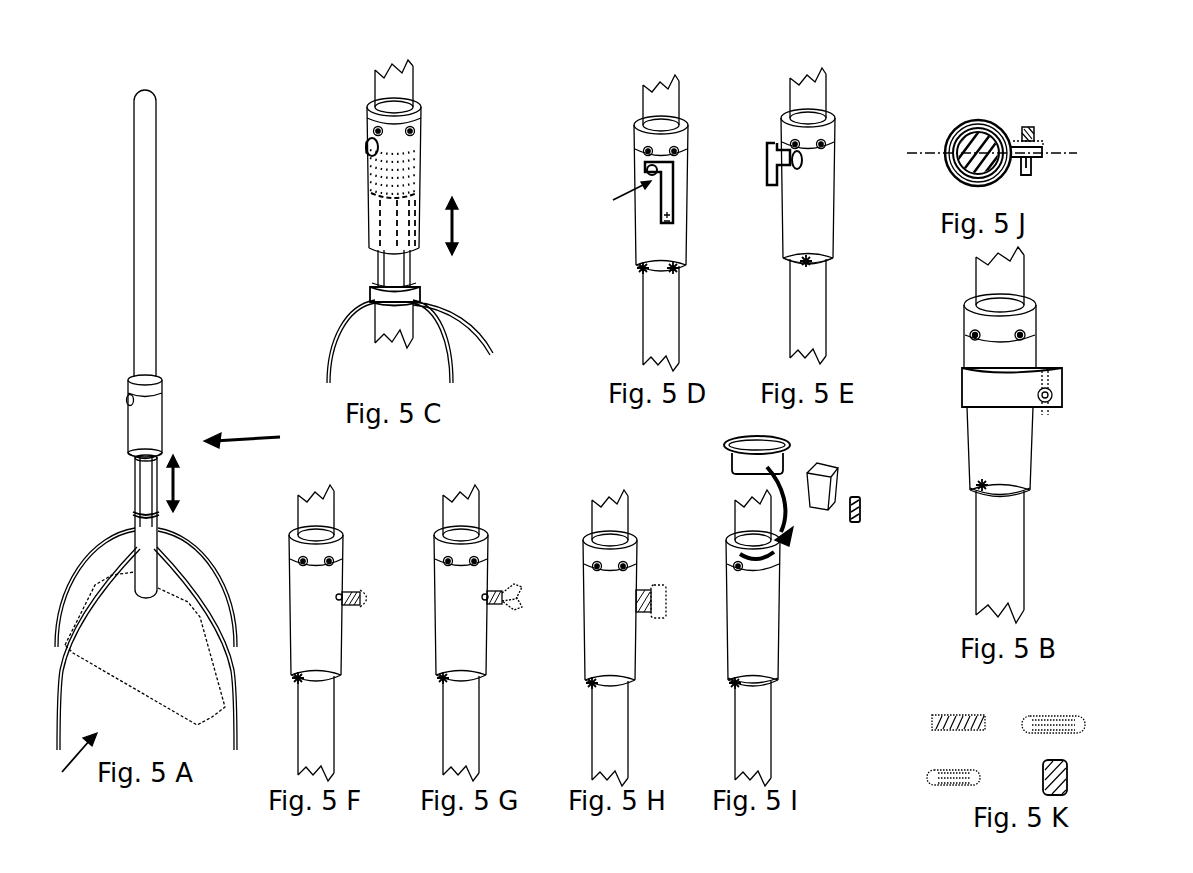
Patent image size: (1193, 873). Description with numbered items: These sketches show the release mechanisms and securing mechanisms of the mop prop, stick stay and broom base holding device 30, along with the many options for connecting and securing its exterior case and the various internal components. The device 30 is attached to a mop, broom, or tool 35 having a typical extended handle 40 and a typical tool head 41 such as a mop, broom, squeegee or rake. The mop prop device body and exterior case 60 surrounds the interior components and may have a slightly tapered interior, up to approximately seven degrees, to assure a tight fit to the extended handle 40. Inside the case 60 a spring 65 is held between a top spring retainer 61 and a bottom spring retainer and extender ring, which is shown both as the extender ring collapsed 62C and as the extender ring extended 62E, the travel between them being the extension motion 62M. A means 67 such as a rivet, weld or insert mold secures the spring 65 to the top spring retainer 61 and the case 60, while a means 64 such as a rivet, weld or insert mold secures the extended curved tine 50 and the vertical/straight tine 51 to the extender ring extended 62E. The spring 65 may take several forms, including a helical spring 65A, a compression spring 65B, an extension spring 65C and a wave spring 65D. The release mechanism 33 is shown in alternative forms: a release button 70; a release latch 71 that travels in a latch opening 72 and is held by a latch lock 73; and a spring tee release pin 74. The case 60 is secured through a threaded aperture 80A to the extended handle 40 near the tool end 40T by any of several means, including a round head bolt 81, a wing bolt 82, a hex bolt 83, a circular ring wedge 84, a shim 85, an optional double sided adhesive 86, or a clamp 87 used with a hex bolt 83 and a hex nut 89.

In FIG. 5A, the mop prop, stick stay and broom base holding device 30 is at (256, 440).
In FIG. 5A, the release mechanism 33 is at (126, 401).
In FIG. 5C, the release mechanism 33 is at (366, 140).
In FIG. 5D, the release mechanism 33 is at (652, 170).
In FIG. 5E, the release mechanism 33 is at (784, 164).
In FIG. 5A, the mop, broom, or tool 35 is at (67, 766).
In FIG. 5A, the extended handle 40 is at (146, 277).
In FIG. 5C, the extended handle 40 is at (405, 90).
In FIG. 5D, the extended handle 40 is at (661, 100).
In FIG. 5E, the extended handle 40 is at (808, 93).
In FIG. 5J, the extended handle 40 is at (955, 167).
In FIG. 5B, the extended handle 40 is at (1024, 276).
In FIG. 5F, the extended handle 40 is at (358, 633).
In FIG. 5G, the extended handle 40 is at (502, 633).
In FIG. 5H, the extended handle 40 is at (652, 638).
In FIG. 5I, the extended handle 40 is at (729, 638).
In FIG. 5D, the tool end 40T is at (613, 318).
In FIG. 5E, the tool end 40T is at (856, 311).
In FIG. 5B, the tool end 40T is at (1057, 578).
In FIG. 5A, the tool head 41 is at (132, 667).
In FIG. 5A, the extended curved tine 50 is at (200, 548).
In FIG. 5C, the extended curved tine 50 is at (350, 318).
In FIG. 5A, the vertical/straight tine 51 is at (134, 500).
In FIG. 5C, the vertical/straight tine 51 is at (379, 262).
In FIG. 5A, the mop prop device body and exterior case 60 is at (148, 417).
In FIG. 5C, the mop prop device body and exterior case 60 is at (372, 225).
In FIG. 5D, the mop prop device body and exterior case 60 is at (622, 193).
In FIG. 5E, the mop prop device body and exterior case 60 is at (836, 186).
In FIG. 5J, the mop prop device body and exterior case 60 is at (993, 122).
In FIG. 5B, the mop prop device body and exterior case 60 is at (1042, 410).
In FIG. 5F, the mop prop device body and exterior case 60 is at (340, 618).
In FIG. 5G, the mop prop device body and exterior case 60 is at (492, 622).
In FIG. 5H, the mop prop device body and exterior case 60 is at (582, 608).
In FIG. 5I, the mop prop device body and exterior case 60 is at (787, 608).
In FIG. 5C, the top spring retainer 61 is at (421, 123).
In FIG. 5A, the extender ring collapsed 62C is at (134, 459).
In FIG. 5C, the extender ring collapsed 62C is at (417, 197).
In FIG. 5E, the extender ring collapsed 62C is at (842, 132).
In FIG. 5B, the extender ring collapsed 62C is at (970, 353).
In FIG. 5F, the extender ring collapsed 62C is at (316, 561).
In FIG. 5G, the extender ring collapsed 62C is at (461, 562).
In FIG. 5H, the extender ring collapsed 62C is at (610, 566).
In FIG. 5I, the extender ring collapsed 62C is at (791, 567).
In FIG. 5A, the extender ring extended 62E is at (134, 516).
In FIG. 5C, the extender ring extended 62E is at (418, 287).
In FIG. 5E, the extender ring extended 62E is at (839, 269).
In FIG. 5B, the extender ring extended 62E is at (1036, 520).
In FIG. 5I, the extender ring extended 62E is at (802, 685).
In FIG. 5A, the extension motion 62M is at (176, 484).
In FIG. 5C, the extension motion 62M is at (456, 222).
In FIG. 5C, the means for securing tines to extender ring 64 is at (373, 290).
In FIG. 5D, the means for securing tines to extender ring 64 is at (627, 278).
In FIG. 5E, the means for securing tines to extender ring 64 is at (806, 261).
In FIG. 5B, the means for securing tines to extender ring 64 is at (939, 488).
In FIG. 5F, the means for securing tines to extender ring 64 is at (298, 678).
In FIG. 5G, the means for securing tines to extender ring 64 is at (443, 678).
In FIG. 5H, the means for securing tines to extender ring 64 is at (592, 683).
In FIG. 5I, the means for securing tines to extender ring 64 is at (700, 686).
In FIG. 5C, the spring 65 is at (378, 173).
In FIG. 5K, the helical spring 65A is at (938, 725).
In FIG. 5K, the compression spring 65B is at (945, 778).
In FIG. 5K, the extension spring 65C is at (1055, 723).
In FIG. 5K, the wave spring 65D is at (1062, 779).
In FIG. 5C, the means for securing spring to top spring retainer and case 67 is at (414, 136).
In FIG. 5D, the means for securing spring to top spring retainer and case 67 is at (680, 140).
In FIG. 5E, the means for securing spring to top spring retainer and case 67 is at (839, 161).
In FIG. 5G, the means for securing spring to top spring retainer and case 67 is at (439, 583).
In FIG. 5C, the release button 70 is at (317, 113).
In FIG. 5D, the release latch 71 is at (593, 131).
In FIG. 5D, the latch opening 72 is at (690, 192).
In FIG. 5D, the latch lock 73 is at (592, 184).
In FIG. 5E, the spring tee release pin 74 is at (751, 120).
In FIG. 5F, the threaded aperture 80A is at (361, 536).
In FIG. 5G, the threaded aperture 80A is at (509, 533).
In FIG. 5F, the round head bolt 81 is at (379, 564).
In FIG. 5J, the wing bolt 82 is at (1030, 165).
In FIG. 5B, the wing bolt 82 is at (1100, 426).
In FIG. 5G, the wing bolt 82 is at (529, 566).
In FIG. 5H, the hex bolt 83 is at (676, 628).
In FIG. 5I, the circular ring wedge 84 is at (813, 481).
In FIG. 5I, the shim 85 is at (863, 478).
In FIG. 5I, the optional double sided adhesive 86 is at (891, 524).
In FIG. 5J, the clamp 87 is at (960, 128).
In FIG. 5B, the clamp 87 is at (1064, 346).
In FIG. 5J, the hex nut 89 is at (1037, 138).